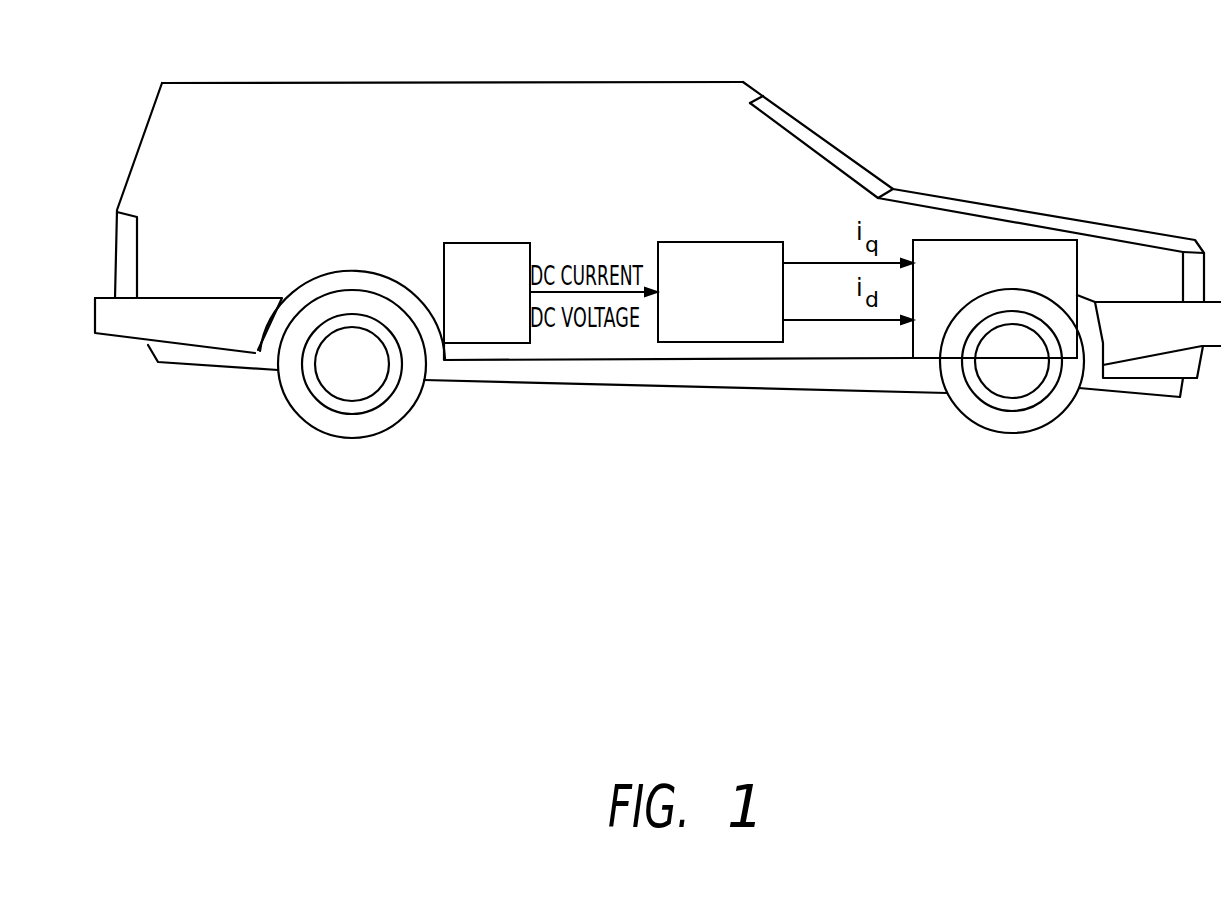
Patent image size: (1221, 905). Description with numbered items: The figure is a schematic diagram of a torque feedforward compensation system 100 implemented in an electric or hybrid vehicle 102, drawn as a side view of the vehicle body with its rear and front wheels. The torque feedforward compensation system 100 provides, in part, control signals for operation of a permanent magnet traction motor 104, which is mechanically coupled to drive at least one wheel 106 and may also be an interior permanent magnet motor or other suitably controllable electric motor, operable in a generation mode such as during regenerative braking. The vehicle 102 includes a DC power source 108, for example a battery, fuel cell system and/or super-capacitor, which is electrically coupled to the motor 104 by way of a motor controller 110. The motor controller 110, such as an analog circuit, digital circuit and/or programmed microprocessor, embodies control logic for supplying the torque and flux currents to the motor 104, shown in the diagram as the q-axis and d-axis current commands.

The torque feedforward compensation system 100 is at (658, 260).
The electric or hybrid vehicle 102 is at (488, 82).
The permanent magnet traction motor 104 is at (1034, 240).
The wheel 106 is at (1010, 435).
The DC power source 108 is at (470, 243).
The motor controller 110 is at (688, 242).